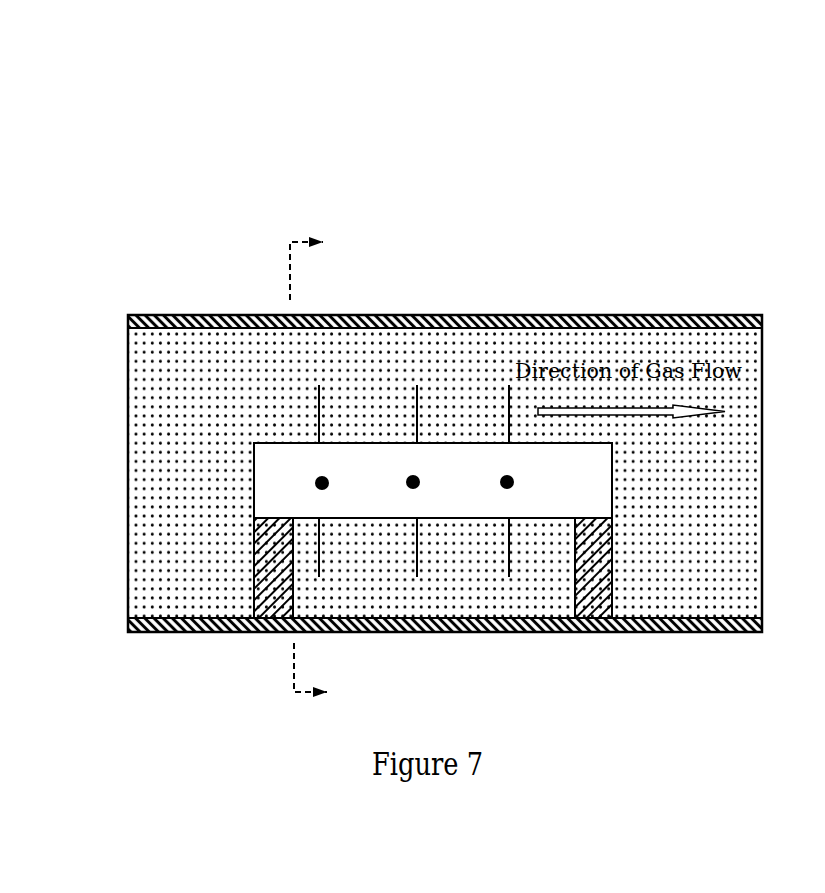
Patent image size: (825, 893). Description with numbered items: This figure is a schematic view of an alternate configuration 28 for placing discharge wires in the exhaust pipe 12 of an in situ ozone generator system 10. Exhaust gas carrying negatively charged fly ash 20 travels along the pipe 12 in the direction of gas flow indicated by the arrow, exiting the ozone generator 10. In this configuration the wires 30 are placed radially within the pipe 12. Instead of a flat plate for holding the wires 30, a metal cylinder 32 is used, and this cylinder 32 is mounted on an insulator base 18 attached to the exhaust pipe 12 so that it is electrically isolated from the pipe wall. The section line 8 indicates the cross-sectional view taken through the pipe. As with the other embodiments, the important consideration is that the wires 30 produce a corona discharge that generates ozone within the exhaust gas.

The section line 8- 8 is at (334, 471).
The in situ ozone generator system 10 is at (388, 190).
The exhaust pipe 12 is at (558, 317).
The insulator base 18 is at (600, 577).
The fly ash 20 is at (227, 392).
The alternate configuration 28 is at (381, 372).
The wires 30 is at (317, 402).
The metal cylinder 32 is at (447, 520).